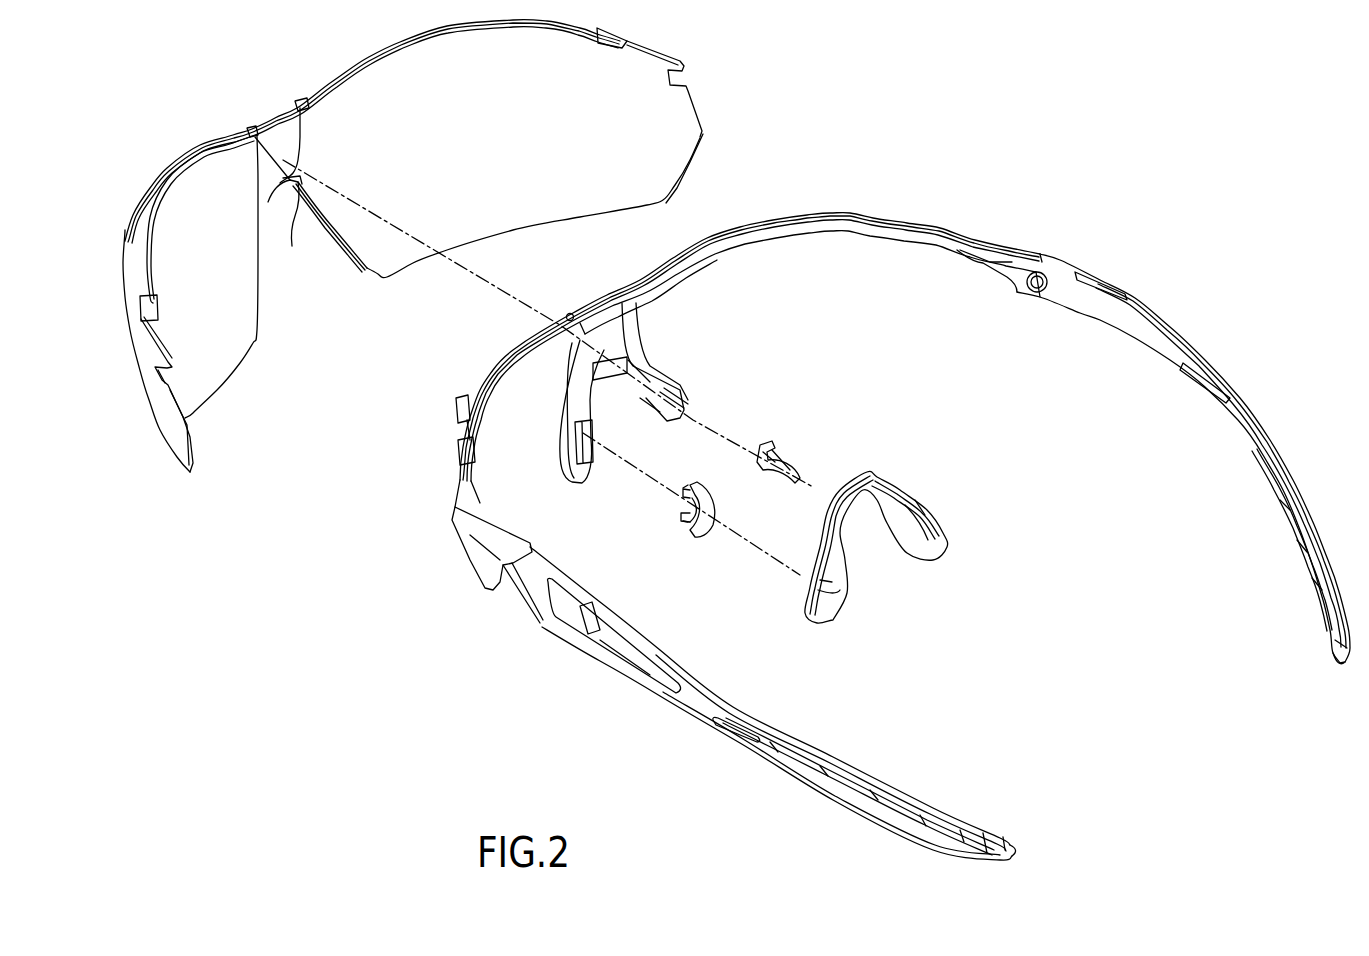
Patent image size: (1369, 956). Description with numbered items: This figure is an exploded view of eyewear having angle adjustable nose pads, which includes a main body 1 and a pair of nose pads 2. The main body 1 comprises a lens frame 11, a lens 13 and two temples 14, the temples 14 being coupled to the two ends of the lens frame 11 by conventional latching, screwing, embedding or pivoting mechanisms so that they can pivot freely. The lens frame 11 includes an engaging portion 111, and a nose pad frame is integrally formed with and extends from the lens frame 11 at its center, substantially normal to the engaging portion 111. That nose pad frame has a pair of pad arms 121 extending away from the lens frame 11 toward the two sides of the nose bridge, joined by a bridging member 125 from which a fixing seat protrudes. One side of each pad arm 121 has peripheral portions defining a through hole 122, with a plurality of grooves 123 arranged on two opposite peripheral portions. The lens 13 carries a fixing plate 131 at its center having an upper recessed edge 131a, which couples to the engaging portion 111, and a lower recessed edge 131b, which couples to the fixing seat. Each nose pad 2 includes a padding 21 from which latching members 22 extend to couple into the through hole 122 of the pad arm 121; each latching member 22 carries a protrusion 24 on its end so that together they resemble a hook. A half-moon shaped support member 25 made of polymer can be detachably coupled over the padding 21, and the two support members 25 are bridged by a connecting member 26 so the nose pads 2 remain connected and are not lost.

The main body 1 is at (850, 211).
The nose pads 2 is at (777, 413).
The lens frame 11 is at (613, 310).
The engaging portion 111 is at (583, 310).
The pad arms 121 is at (637, 380).
The through hole 122 is at (650, 400).
The grooves 123 is at (688, 412).
The bridging member 125 is at (605, 378).
The lens 13 is at (716, 101).
The fixing plate 131 is at (272, 153).
The upper recessed edge 131a is at (273, 123).
The lower recessed edge 131b is at (289, 196).
The temples 14 is at (1307, 501).
The padding 21 is at (712, 532).
The latching members 22 is at (687, 528).
The protrusion 24 is at (680, 517).
The support member 25 is at (960, 546).
The connecting member 26 is at (840, 487).